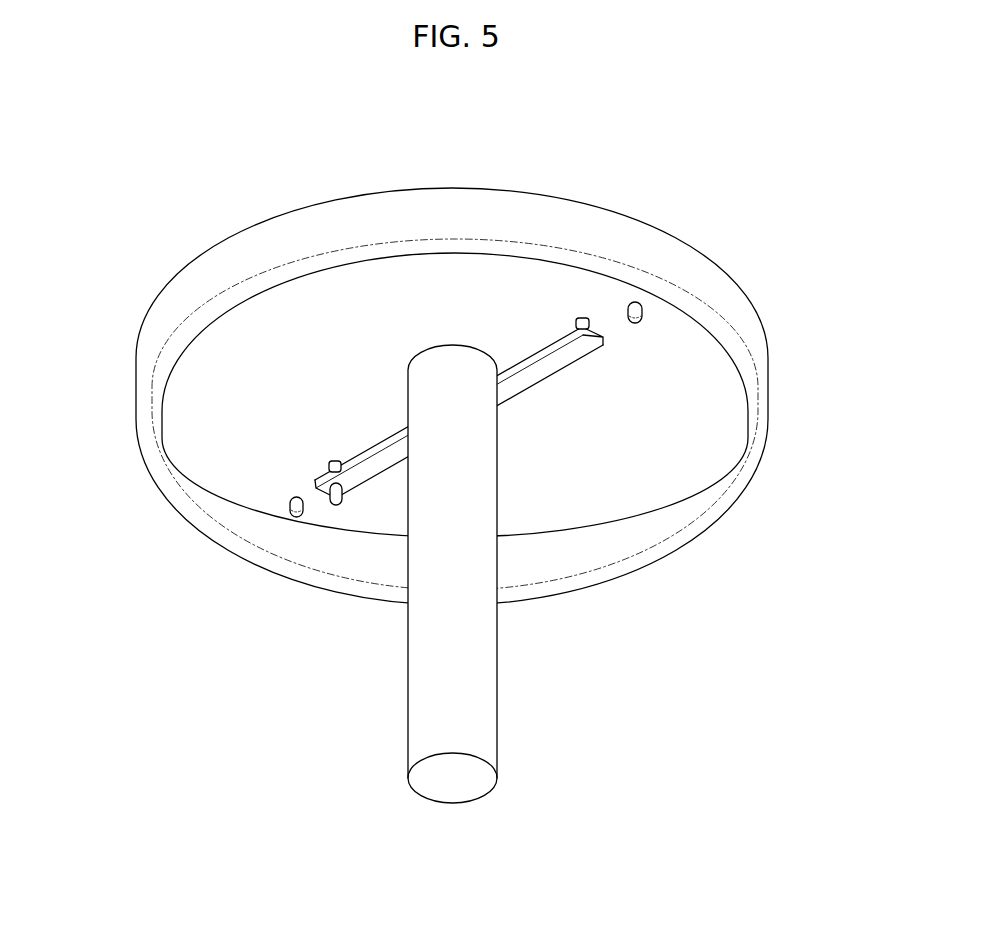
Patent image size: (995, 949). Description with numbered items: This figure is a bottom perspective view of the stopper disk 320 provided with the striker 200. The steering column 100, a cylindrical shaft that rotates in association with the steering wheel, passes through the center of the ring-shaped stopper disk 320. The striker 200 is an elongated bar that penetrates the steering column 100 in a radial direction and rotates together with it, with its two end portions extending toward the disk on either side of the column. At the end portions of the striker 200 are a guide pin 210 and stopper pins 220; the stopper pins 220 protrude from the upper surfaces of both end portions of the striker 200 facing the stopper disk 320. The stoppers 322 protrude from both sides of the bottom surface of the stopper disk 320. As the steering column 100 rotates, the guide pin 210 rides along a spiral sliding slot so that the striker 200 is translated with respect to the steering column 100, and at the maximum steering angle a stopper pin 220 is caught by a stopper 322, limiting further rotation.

The steering column 100 is at (423, 713).
The striker 200 is at (535, 382).
The guide pin 210 is at (335, 506).
The stopper pin 220 is at (585, 320).
The stopper disk 320 is at (552, 215).
The stopper 322 is at (293, 515).